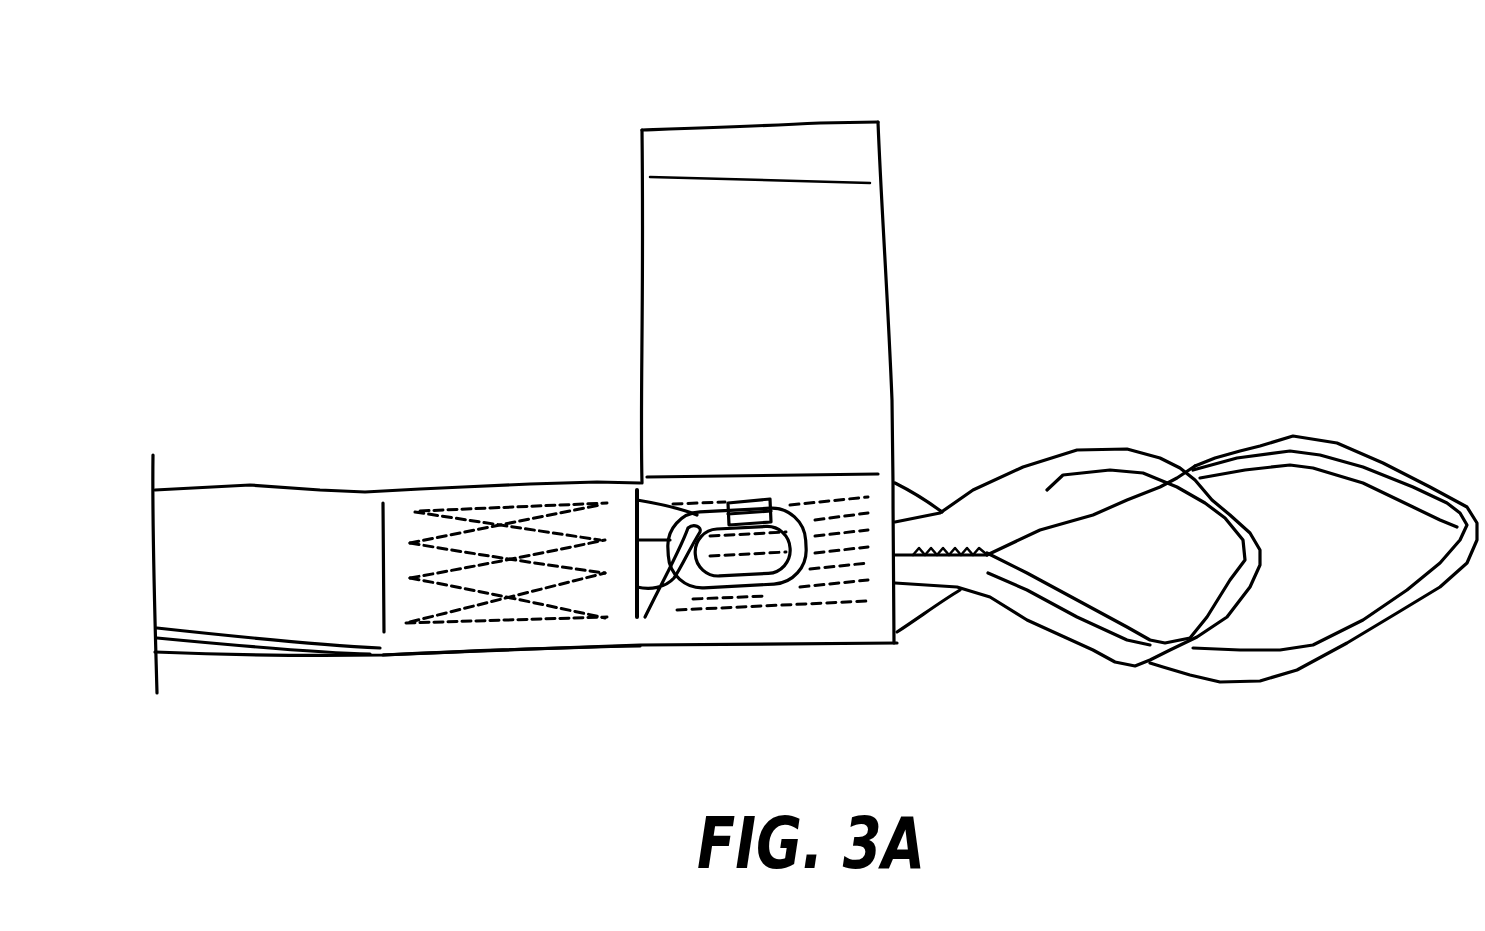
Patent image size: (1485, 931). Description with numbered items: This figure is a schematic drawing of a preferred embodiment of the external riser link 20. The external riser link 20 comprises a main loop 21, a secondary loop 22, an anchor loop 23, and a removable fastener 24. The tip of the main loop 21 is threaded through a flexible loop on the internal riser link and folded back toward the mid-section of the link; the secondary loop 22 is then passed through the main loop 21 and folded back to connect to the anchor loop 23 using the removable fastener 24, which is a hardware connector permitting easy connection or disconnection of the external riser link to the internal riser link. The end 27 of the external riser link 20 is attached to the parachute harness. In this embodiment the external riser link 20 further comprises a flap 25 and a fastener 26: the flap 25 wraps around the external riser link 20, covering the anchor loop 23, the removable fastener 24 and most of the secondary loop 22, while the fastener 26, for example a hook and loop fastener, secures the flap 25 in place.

The external riser link 20 is at (1195, 137).
The main loop 21 is at (1330, 655).
The secondary loop 22 is at (1097, 447).
The anchor loop 23 is at (667, 597).
The removable fastener 24 is at (773, 583).
The flap 25 is at (672, 380).
The fastener 26 is at (640, 150).
The end 27 is at (357, 487).